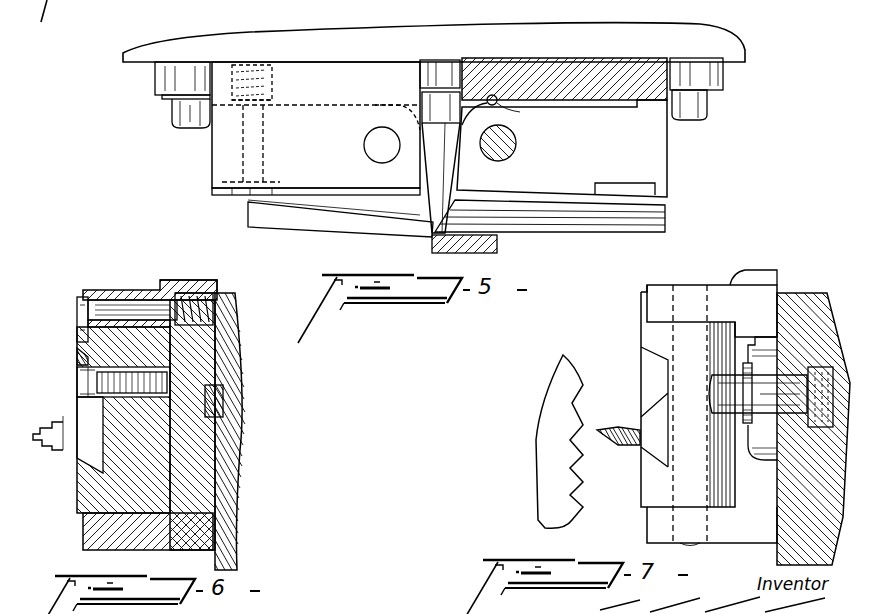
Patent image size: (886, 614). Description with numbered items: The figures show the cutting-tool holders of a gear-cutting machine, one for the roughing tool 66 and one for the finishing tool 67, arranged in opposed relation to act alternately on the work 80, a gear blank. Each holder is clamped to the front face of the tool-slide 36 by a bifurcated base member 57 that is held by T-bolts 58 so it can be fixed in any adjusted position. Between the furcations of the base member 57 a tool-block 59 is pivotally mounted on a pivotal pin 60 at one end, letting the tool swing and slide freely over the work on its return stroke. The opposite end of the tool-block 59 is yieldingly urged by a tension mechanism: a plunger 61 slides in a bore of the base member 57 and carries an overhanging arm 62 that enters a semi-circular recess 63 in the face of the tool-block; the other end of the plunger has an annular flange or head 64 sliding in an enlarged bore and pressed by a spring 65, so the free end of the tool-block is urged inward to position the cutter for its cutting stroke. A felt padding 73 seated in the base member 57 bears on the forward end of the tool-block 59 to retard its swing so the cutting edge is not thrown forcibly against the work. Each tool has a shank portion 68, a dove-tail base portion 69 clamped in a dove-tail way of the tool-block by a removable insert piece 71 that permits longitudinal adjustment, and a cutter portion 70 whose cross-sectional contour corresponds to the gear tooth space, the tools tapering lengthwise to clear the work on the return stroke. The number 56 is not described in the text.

In FIG. 5, the tool-slide 36 is at (434, 42).
In FIG. 6, the tool-slide 36 is at (240, 512).
In FIG. 7, the tool-slide 36 is at (795, 296).
In FIG. 5, the fastening screw 56 is at (193, 118).
In FIG. 5, the bifurcated base member 57 is at (373, 68).
In FIG. 6, the bifurcated base member 57 is at (103, 290).
In FIG. 7, the bifurcated base member 57 is at (760, 295).
In FIG. 5, the T-bolts 58 is at (445, 112).
In FIG. 7, the T-bolts 58 is at (764, 425).
In FIG. 5, the tool-block 59 is at (653, 157).
In FIG. 6, the tool-block 59 is at (77, 493).
In FIG. 7, the tool-block 59 is at (688, 330).
In FIG. 5, the pivotal pin 60 is at (517, 147).
In FIG. 7, the pivotal pin 60 is at (573, 407).
In FIG. 5, the plunger 61 is at (263, 143).
In FIG. 6, the plunger 61 is at (140, 300).
In FIG. 5, the overhanging arm 62 is at (245, 193).
In FIG. 6, the overhanging arm 62 is at (77, 322).
In FIG. 5, the semi-circular recess 63 is at (282, 190).
In FIG. 5, the annular flange or head 64 is at (272, 66).
In FIG. 6, the annular flange or head 64 is at (213, 296).
In FIG. 5, the spring 65 is at (270, 95).
In FIG. 6, the spring 65 is at (193, 282).
In FIG. 5, the roughing tool 66 is at (575, 210).
In FIG. 7, the roughing tool 66 is at (720, 414).
In FIG. 5, the finishing tool 67 is at (360, 207).
In FIG. 6, the shank portion 68 is at (62, 415).
In FIG. 7, the shank portion 68 is at (597, 425).
In FIG. 6, the dove-tail base portion 69 is at (90, 435).
In FIG. 7, the dove-tail base portion 69 is at (650, 445).
In FIG. 6, the cutter portion 70 is at (36, 428).
In FIG. 7, the cutter portion 70 is at (598, 428).
In FIG. 6, the removable insert piece 71 is at (77, 353).
In FIG. 7, the removable insert piece 71 is at (645, 364).
In FIG. 5, the felt padding 73 is at (375, 100).
In FIG. 5, the work 80 is at (497, 246).